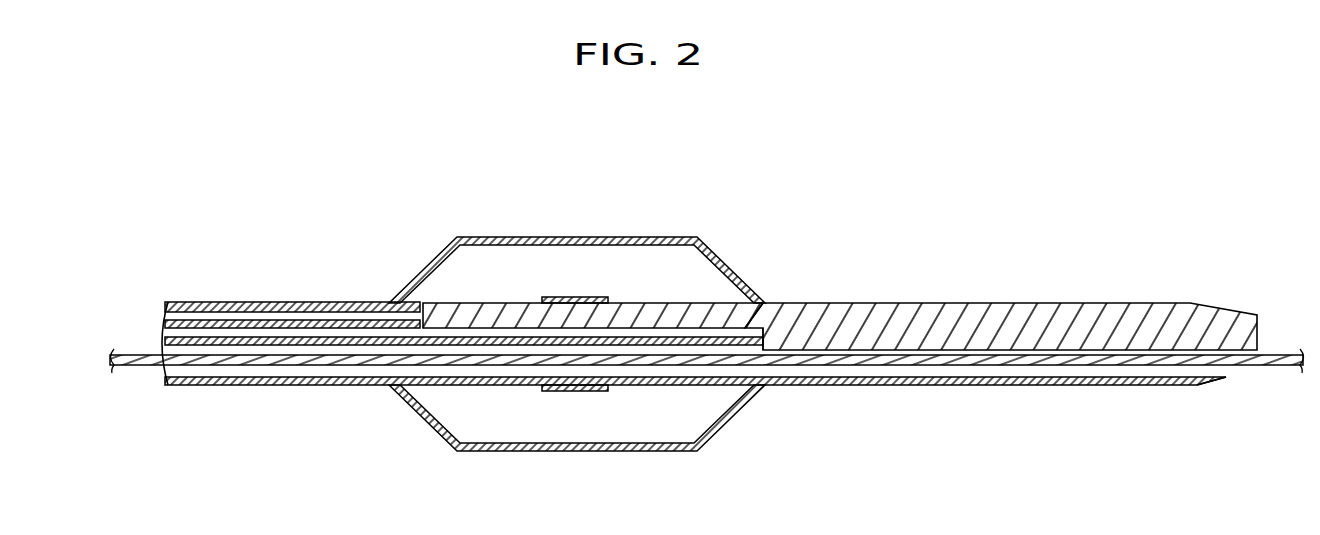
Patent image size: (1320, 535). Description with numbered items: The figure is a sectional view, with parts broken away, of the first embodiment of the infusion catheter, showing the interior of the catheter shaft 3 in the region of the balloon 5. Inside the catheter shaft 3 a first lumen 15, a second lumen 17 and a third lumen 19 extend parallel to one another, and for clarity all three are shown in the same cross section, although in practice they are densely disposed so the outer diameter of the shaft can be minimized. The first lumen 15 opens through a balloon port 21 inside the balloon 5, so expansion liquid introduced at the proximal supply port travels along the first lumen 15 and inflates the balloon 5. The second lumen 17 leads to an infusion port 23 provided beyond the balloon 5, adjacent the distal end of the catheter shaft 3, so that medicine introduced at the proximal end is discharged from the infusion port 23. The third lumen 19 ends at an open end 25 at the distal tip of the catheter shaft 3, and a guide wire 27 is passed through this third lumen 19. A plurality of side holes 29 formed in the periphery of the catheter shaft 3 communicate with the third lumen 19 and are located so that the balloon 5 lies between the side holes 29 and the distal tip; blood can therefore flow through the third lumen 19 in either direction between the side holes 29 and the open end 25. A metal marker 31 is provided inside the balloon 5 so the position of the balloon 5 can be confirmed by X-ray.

The catheter shaft 3 is at (857, 310).
The balloon 5 is at (700, 238).
The first lumen 15 is at (164, 305).
The second lumen 17 is at (163, 325).
The third lumen 19 is at (162, 347).
The balloon port 21 is at (424, 316).
The infusion port 23 is at (783, 308).
The open end 25 is at (1233, 372).
The guide wire 27 is at (135, 362).
The side holes 29 is at (337, 378).
The metal marker 31 is at (572, 297).